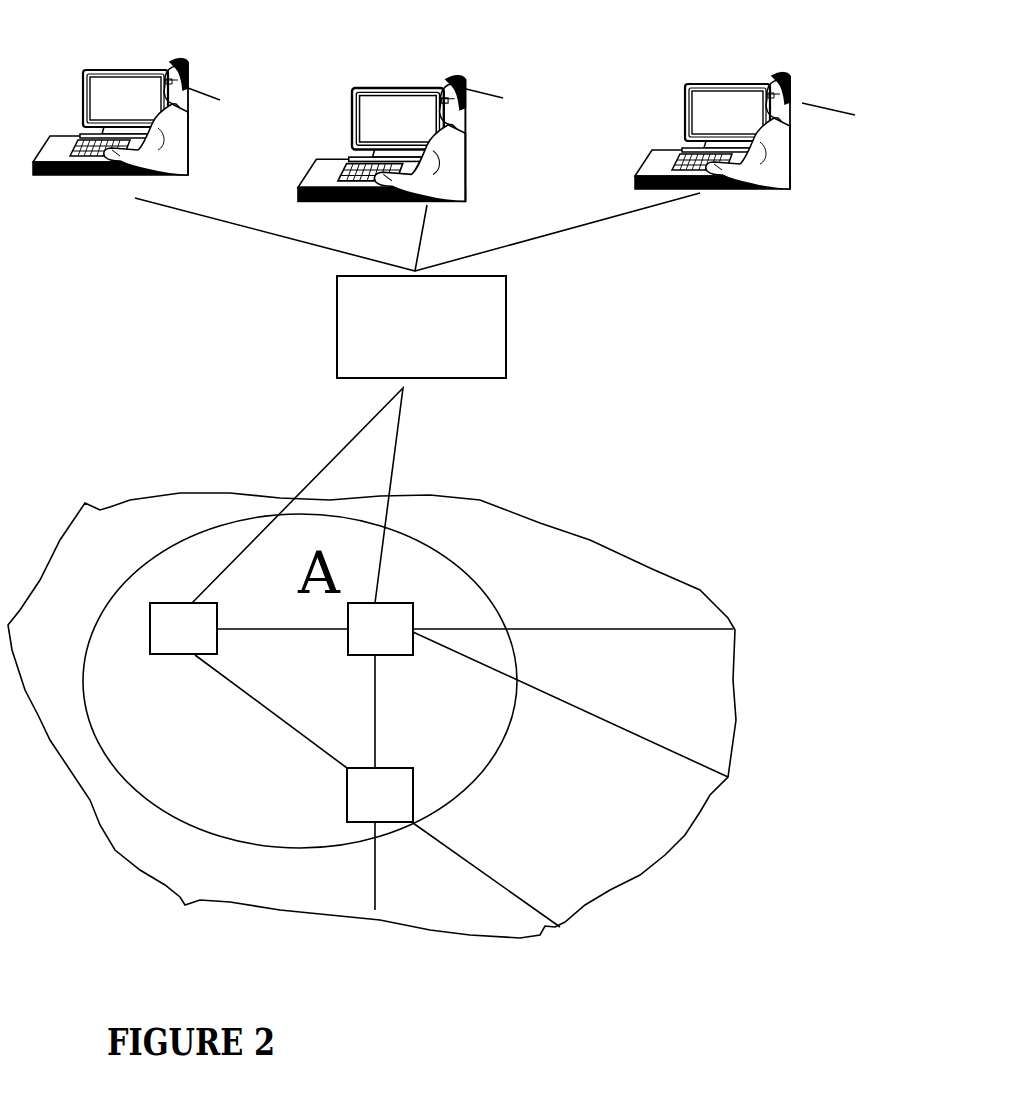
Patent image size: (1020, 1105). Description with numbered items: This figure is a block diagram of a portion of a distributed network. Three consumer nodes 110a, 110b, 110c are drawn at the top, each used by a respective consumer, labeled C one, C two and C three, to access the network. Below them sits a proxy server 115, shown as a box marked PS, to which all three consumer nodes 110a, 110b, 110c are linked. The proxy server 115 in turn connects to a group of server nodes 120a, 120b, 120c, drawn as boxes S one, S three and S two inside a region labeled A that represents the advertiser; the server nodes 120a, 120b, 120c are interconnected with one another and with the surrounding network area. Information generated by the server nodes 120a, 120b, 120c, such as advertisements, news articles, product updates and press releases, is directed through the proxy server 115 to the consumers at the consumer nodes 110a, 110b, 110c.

The consumer node 110a is at (142, 71).
The consumer node 110b is at (395, 86).
The consumer node 110c is at (730, 83).
The proxy server 115 is at (506, 325).
The server node 120a is at (195, 655).
The server node 120b is at (388, 823).
The server node 120c is at (413, 628).